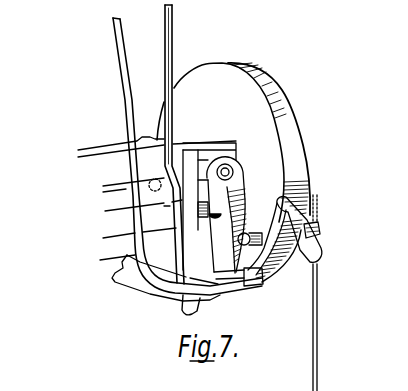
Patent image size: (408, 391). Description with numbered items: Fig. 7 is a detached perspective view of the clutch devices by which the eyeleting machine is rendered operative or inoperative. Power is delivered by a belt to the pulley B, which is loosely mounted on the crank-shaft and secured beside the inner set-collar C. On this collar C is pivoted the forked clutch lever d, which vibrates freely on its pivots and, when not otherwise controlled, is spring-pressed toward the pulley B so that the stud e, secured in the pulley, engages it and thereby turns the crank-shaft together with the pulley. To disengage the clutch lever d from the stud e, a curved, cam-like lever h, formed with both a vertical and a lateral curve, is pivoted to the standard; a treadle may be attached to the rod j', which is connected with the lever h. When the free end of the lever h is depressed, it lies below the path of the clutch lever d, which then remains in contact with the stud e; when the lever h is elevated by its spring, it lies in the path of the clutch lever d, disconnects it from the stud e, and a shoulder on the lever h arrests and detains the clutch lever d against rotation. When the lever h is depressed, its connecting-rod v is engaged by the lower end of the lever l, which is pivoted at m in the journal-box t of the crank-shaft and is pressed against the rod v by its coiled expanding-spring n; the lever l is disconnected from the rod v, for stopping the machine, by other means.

The pulley B is at (233, 172).
The inner set-collar C is at (201, 150).
The forked clutch lever d is at (226, 218).
The stud e is at (252, 233).
The cam-like lever h is at (323, 258).
The rod j' is at (319, 293).
The lever l is at (182, 160).
The pivot m is at (163, 177).
The coiled expanding-spring n is at (172, 206).
The journal-box t is at (157, 219).
The connecting-rod v is at (187, 156).